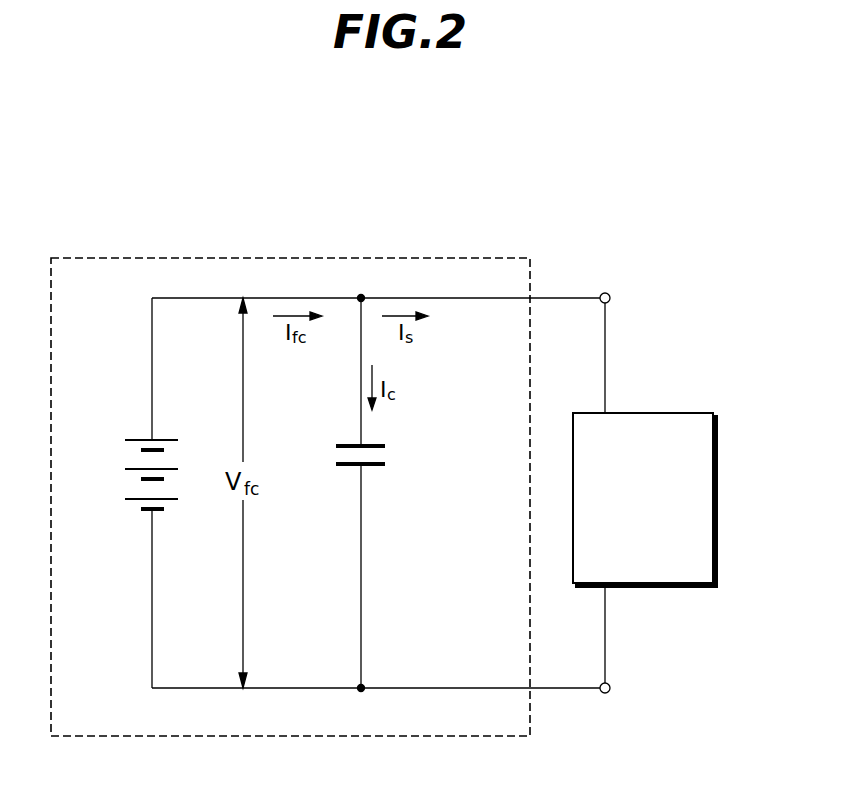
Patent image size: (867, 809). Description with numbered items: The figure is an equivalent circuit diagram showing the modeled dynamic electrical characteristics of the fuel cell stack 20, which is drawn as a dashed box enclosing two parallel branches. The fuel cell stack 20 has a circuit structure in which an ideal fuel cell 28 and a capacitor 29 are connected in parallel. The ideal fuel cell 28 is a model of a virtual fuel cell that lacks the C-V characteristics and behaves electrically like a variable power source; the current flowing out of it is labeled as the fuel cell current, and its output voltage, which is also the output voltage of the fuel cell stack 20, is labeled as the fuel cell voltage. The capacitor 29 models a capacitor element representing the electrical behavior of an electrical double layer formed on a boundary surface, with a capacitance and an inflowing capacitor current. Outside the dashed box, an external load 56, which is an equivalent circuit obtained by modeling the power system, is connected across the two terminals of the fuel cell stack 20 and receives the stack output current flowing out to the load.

The fuel cell stack 20 is at (392, 258).
The ideal fuel cell 28 is at (127, 480).
The capacitor 29 is at (368, 467).
The external load 56 is at (718, 482).